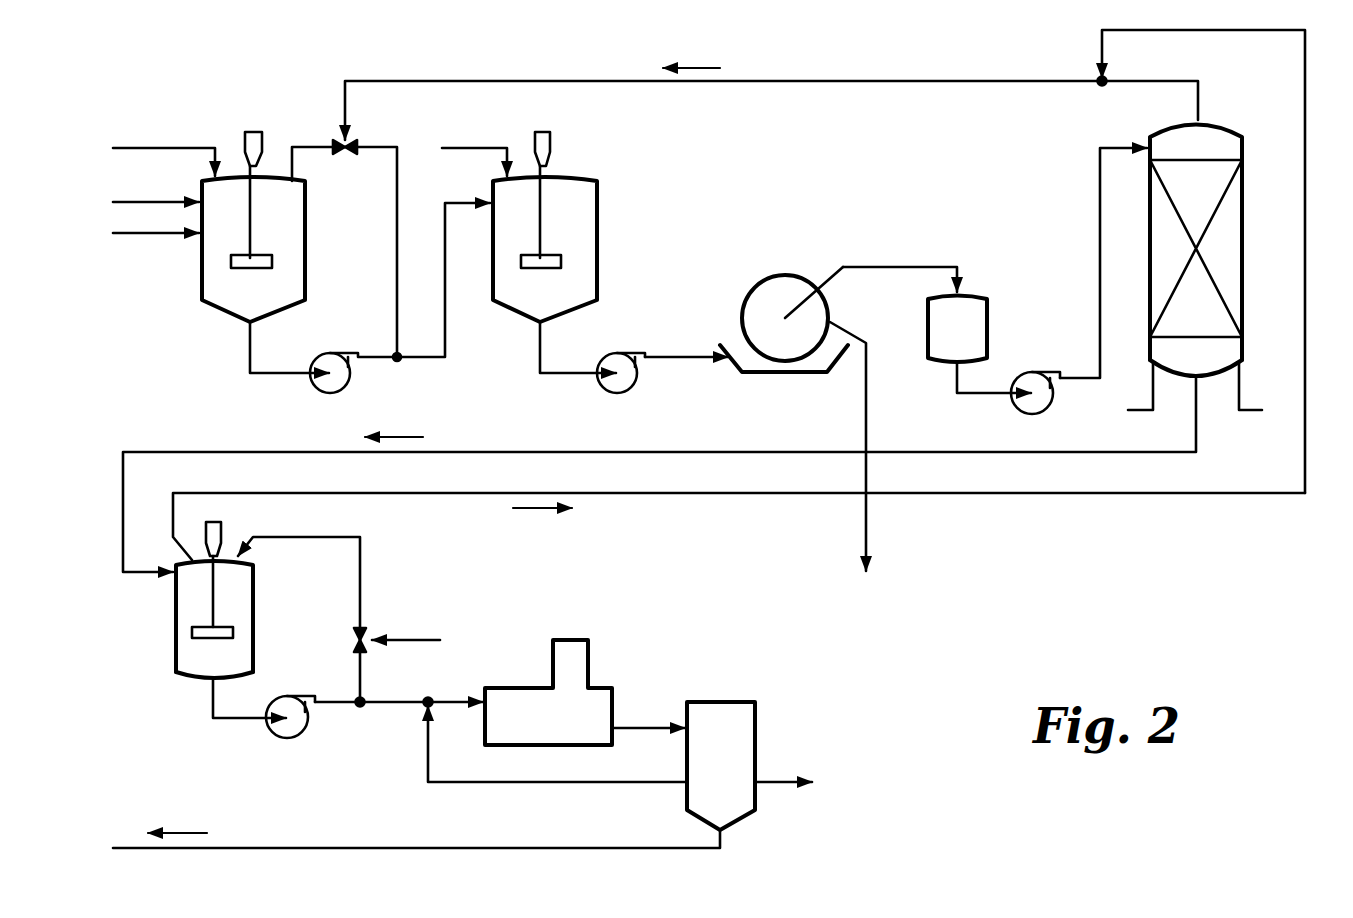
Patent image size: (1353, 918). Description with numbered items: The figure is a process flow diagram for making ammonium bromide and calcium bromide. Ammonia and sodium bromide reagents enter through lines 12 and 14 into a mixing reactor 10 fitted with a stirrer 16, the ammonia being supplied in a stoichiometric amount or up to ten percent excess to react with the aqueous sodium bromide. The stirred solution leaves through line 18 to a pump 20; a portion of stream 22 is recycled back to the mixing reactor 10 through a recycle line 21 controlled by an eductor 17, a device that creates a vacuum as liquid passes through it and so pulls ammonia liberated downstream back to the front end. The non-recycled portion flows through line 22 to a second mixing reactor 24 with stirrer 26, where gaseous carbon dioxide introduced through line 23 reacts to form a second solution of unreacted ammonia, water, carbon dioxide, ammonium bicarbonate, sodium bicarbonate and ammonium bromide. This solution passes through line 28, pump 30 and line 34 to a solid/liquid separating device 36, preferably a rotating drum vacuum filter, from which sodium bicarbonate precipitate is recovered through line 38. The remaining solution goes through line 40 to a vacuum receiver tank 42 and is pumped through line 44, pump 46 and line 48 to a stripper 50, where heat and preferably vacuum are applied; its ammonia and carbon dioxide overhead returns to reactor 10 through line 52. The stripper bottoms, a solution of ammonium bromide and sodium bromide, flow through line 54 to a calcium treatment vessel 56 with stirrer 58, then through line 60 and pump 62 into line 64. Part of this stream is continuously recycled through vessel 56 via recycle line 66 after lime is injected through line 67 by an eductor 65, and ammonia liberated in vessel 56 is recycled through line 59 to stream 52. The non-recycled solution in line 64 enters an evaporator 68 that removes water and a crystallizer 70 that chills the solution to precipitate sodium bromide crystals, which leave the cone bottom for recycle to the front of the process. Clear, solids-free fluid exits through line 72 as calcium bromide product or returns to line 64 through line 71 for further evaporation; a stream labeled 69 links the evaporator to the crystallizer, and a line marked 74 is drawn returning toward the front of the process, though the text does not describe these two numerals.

The mixing reactor 10 is at (244, 262).
The line 12 is at (140, 149).
The line 14 is at (140, 203).
The stirrer 16 is at (257, 132).
The eductor 17 is at (376, 127).
The line 18 is at (270, 375).
The pump 20 is at (362, 378).
The recycle line 21 is at (397, 251).
The line 22 is at (430, 362).
The line 23 is at (470, 166).
The mixing reactor 24 is at (521, 312).
The stirrer 26 is at (552, 132).
The line 28 is at (562, 374).
The pump 30 is at (647, 382).
The line 34 is at (690, 356).
The solid/liquid separating device 36 is at (783, 297).
The line 38 is at (866, 393).
The line 40 is at (903, 267).
The vacuum receiver tank 42 is at (991, 326).
The line 44 is at (980, 394).
The pump 46 is at (1057, 399).
The line 48 is at (1100, 209).
The stripper 50 is at (1245, 225).
The line 52 is at (420, 81).
The line 54 is at (1196, 416).
The calcium treatment vessel 56 is at (184, 617).
The stirrer 58 is at (248, 530).
The line 59 is at (1305, 300).
The line 60 is at (236, 719).
The pump 62 is at (310, 733).
The line 64 is at (385, 703).
The eductor 65 is at (340, 611).
The recycle line 66 is at (360, 583).
The line 67 is at (428, 641).
The evaporator 68 is at (573, 685).
The evaporator outlet line 69 is at (628, 728).
The crystallizer 70 is at (712, 699).
The line 71 is at (543, 782).
The line 72 is at (776, 783).
The return line 74 is at (140, 234).